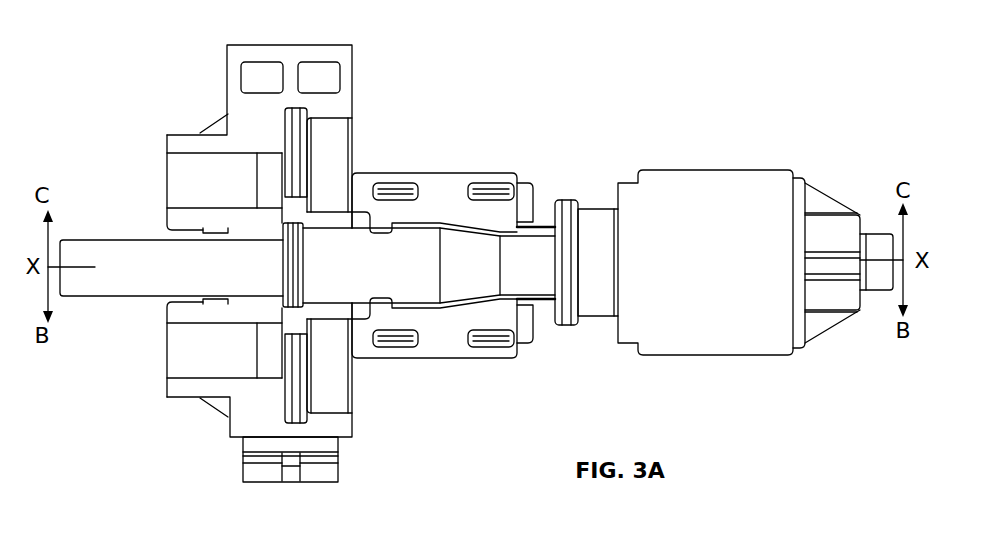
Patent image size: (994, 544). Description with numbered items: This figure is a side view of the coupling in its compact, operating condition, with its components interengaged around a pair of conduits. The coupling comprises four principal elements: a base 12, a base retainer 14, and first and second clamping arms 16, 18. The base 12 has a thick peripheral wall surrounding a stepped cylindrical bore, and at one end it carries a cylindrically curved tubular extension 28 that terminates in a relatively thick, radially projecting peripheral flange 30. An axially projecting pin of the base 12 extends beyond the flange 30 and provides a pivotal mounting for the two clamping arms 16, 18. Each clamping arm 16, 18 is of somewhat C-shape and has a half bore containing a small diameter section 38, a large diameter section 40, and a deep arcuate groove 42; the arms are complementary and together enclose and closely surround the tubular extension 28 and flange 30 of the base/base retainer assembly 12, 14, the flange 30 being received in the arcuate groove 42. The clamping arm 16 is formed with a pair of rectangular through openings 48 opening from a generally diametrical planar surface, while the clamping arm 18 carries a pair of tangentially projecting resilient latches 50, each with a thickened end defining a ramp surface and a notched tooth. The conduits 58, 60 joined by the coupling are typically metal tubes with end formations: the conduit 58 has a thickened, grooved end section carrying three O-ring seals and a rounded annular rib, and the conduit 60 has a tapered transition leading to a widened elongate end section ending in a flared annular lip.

The base 12 is at (451, 164).
The base retainer 14 is at (747, 160).
The first clamping arm 16 is at (215, 66).
The second clamping arm 18 is at (235, 461).
The tubular extension 28 is at (328, 224).
The peripheral flange 30 is at (295, 218).
The small diameter section 38 is at (170, 182).
The large diameter section 40 is at (330, 177).
The arcuate groove 42 is at (297, 163).
The through openings 48 is at (320, 79).
The resilient latches 50 is at (321, 473).
The conduit 58 is at (97, 287).
The conduit 60 is at (877, 283).